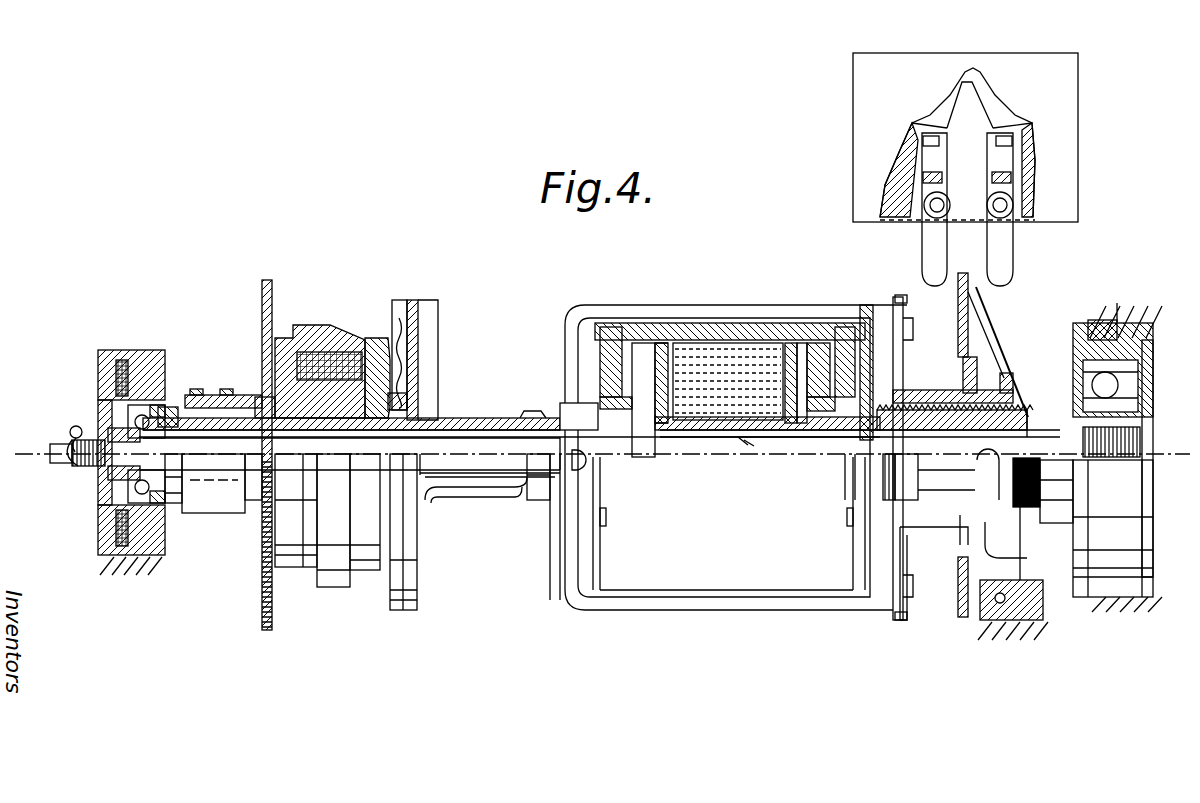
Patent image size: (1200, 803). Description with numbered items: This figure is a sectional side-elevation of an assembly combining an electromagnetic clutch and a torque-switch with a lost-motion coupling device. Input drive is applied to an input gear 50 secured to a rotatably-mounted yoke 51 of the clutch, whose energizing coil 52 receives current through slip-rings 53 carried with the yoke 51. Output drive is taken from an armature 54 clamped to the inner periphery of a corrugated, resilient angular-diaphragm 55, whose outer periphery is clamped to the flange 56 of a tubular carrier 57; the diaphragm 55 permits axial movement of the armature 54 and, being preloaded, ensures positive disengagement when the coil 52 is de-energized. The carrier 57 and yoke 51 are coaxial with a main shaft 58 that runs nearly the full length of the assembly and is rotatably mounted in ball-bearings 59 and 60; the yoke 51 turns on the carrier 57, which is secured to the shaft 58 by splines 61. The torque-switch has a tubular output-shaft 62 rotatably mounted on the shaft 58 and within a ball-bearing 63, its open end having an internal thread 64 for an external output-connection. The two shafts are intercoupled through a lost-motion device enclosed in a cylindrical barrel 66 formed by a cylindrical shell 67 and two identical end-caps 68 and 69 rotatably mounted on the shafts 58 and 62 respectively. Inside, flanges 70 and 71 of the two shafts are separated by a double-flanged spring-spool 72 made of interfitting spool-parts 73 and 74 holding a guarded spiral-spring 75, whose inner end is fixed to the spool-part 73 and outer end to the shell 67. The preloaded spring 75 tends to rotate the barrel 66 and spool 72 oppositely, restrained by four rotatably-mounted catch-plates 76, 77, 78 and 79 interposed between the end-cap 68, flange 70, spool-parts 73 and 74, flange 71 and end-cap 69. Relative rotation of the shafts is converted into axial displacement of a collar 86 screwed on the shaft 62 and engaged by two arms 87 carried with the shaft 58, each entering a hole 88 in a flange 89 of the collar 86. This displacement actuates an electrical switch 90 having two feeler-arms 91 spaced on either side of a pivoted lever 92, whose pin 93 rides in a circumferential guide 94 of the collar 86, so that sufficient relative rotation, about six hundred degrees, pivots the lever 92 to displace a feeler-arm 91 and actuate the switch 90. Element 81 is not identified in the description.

The input gear 50 is at (270, 294).
The yoke 51 is at (345, 342).
The energizing coil 52 is at (322, 370).
The slip-rings 53 is at (226, 392).
The armature 54 is at (374, 340).
The corrugated resilient angular-diaphragm 55 is at (408, 364).
The flange 56 is at (420, 314).
The tubular carrier 57 is at (426, 417).
The main shaft 58 is at (443, 450).
The ball-bearing 59 is at (112, 420).
The ball-bearing 60 is at (1058, 470).
The splines 61 is at (490, 418).
The tubular output-shaft 62 is at (988, 407).
The ball-bearing 63 is at (1140, 386).
The internal thread 64 is at (1146, 440).
The cylindrical barrel 66 is at (729, 542).
The cylindrical shell 67 is at (726, 328).
The end-cap 68 is at (603, 565).
The end-cap 69 is at (857, 562).
The flange 70 is at (644, 350).
The flange 71 is at (818, 343).
The double-flanged spring-spool 72 is at (722, 454).
The spool-part 73 is at (663, 345).
The spool-part 74 is at (790, 342).
The guarded spiral-spring 75 is at (758, 442).
The catch-plate 76 is at (608, 345).
The catch-plate 77 is at (657, 345).
The catch-plate 78 is at (802, 345).
The catch-plate 79 is at (847, 330).
The housing wall 81 is at (608, 358).
The collar 86 is at (962, 393).
The arms 87 is at (728, 306).
The hole 88 is at (908, 302).
The flange 89 is at (905, 340).
The electrical switch 90 is at (1094, 159).
The feeler-arms 91 is at (985, 262).
The pivoted lever 92 is at (992, 334).
The pin 93 is at (960, 518).
The circumferential guide 94 is at (990, 395).